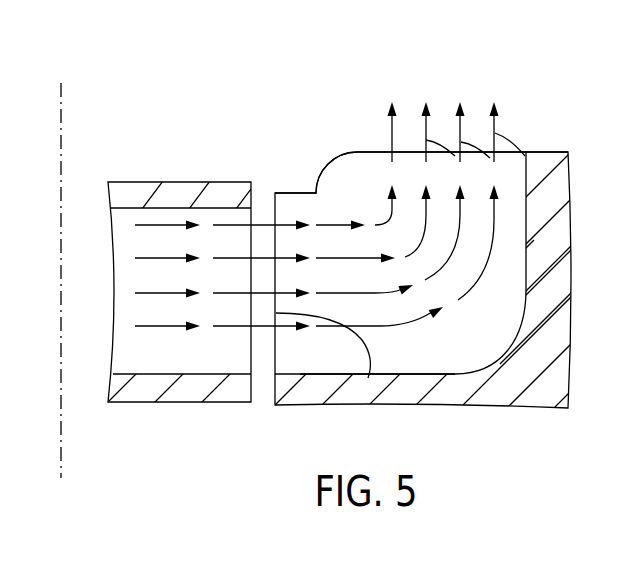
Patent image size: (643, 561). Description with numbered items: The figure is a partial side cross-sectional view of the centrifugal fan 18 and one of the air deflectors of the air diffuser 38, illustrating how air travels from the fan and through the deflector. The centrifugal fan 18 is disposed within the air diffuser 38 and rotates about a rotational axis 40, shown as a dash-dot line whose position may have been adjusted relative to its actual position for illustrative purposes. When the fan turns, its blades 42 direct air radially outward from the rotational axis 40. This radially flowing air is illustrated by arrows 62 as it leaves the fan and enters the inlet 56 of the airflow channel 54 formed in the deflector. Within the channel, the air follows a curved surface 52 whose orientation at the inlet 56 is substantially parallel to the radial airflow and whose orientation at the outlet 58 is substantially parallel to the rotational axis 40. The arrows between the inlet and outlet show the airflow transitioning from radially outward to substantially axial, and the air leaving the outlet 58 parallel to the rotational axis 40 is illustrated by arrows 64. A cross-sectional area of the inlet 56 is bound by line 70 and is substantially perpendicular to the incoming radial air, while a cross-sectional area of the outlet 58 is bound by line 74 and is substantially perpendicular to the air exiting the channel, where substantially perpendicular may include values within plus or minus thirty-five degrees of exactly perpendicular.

The centrifugal fan 18 is at (132, 168).
The air diffuser 38 is at (520, 425).
The rotational axis 40 is at (58, 203).
The blades 42 is at (241, 246).
The curved surface 52 is at (452, 359).
The airflow channel 54 is at (527, 84).
The inlet 56 is at (290, 345).
The outlet 58 is at (523, 132).
The arrows 62 is at (278, 236).
The arrows 64 is at (495, 133).
The line 70 is at (368, 378).
The line 74 is at (378, 151).